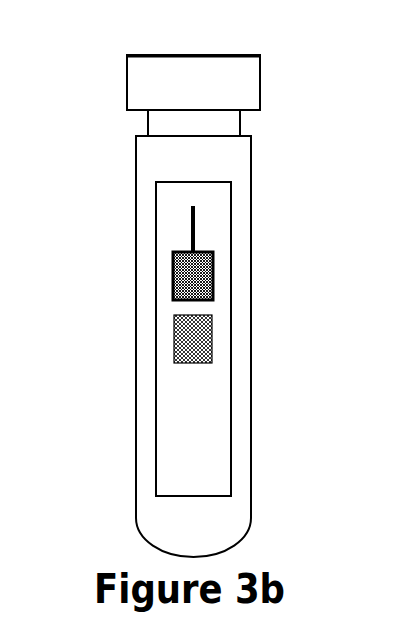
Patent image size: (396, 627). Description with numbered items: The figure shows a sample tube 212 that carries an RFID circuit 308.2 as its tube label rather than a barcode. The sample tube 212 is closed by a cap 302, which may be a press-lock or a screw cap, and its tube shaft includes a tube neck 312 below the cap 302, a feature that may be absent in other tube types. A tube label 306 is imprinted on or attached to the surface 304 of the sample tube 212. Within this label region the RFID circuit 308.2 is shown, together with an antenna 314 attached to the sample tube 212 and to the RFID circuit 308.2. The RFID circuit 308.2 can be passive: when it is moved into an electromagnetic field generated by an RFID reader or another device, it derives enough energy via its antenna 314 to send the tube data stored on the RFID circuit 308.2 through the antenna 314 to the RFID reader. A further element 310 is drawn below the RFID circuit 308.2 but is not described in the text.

The sample tube 212 is at (208, 43).
The cap 302 is at (260, 83).
The tube neck 312 is at (240, 123).
The surface 304 is at (251, 166).
The tube label 306 is at (231, 219).
The antenna 314 is at (192, 215).
The RFID circuit 308.2 is at (213, 277).
The reference element 310 is at (201, 339).